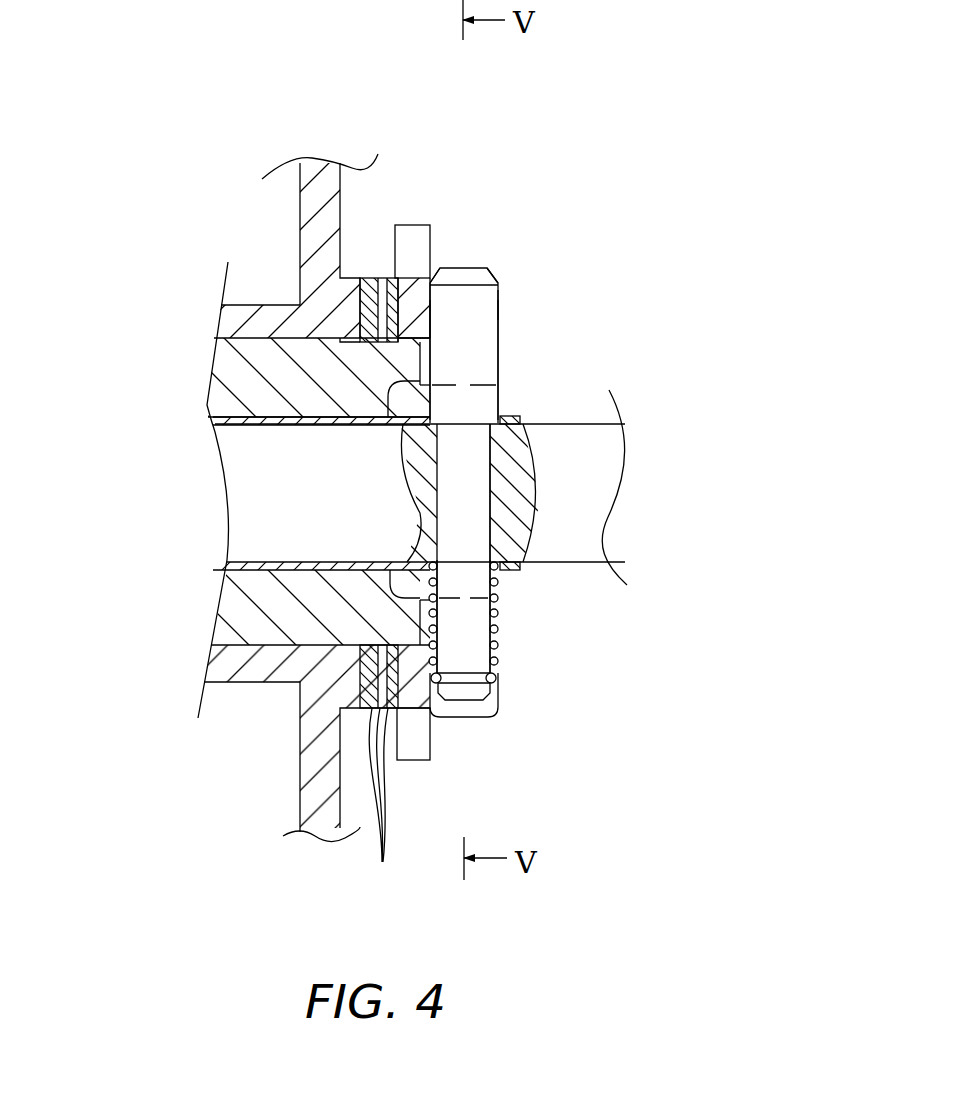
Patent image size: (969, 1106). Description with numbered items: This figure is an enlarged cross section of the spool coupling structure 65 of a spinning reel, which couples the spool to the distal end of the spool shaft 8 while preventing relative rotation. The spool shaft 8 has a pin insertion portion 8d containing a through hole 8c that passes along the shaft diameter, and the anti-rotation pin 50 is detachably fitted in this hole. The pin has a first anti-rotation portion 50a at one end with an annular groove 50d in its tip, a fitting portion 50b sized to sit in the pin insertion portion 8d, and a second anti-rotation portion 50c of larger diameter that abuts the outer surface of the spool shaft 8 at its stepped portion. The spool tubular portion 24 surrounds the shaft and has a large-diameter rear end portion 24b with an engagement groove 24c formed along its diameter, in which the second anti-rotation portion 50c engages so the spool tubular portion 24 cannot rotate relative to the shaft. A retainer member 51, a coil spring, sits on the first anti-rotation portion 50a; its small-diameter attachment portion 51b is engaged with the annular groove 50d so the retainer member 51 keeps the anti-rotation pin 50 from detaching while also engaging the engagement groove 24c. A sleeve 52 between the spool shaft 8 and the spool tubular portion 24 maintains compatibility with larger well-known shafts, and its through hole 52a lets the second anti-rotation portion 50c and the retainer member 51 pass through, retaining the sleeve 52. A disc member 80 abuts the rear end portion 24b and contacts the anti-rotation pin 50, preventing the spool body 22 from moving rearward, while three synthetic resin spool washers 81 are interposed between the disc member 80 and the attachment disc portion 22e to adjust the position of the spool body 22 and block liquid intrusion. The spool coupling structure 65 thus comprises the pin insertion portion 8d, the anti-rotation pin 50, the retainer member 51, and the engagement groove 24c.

The spool shaft 8 is at (246, 534).
The through hole 8c is at (520, 543).
The pin insertion portion 8d is at (448, 512).
The spool body 22 is at (286, 228).
The attachment disc portion 22e is at (325, 185).
The spool tubular portion 24 is at (249, 330).
The rear end portion 24b is at (463, 268).
The engagement groove 24c is at (475, 278).
The anti-rotation pin 50 is at (513, 319).
The first anti-rotation portion 50a is at (477, 625).
The fitting portion 50b is at (478, 480).
The second anti-rotation portion 50c is at (477, 360).
The annular groove 50d is at (467, 685).
The retainer member 51 is at (506, 658).
The attachment portion 51b is at (497, 680).
The sleeve 52 is at (242, 579).
The through hole 52a is at (490, 517).
The spool coupling structure 65 is at (523, 249).
The disc member 80 is at (425, 760).
The spool washers 81 is at (382, 776).